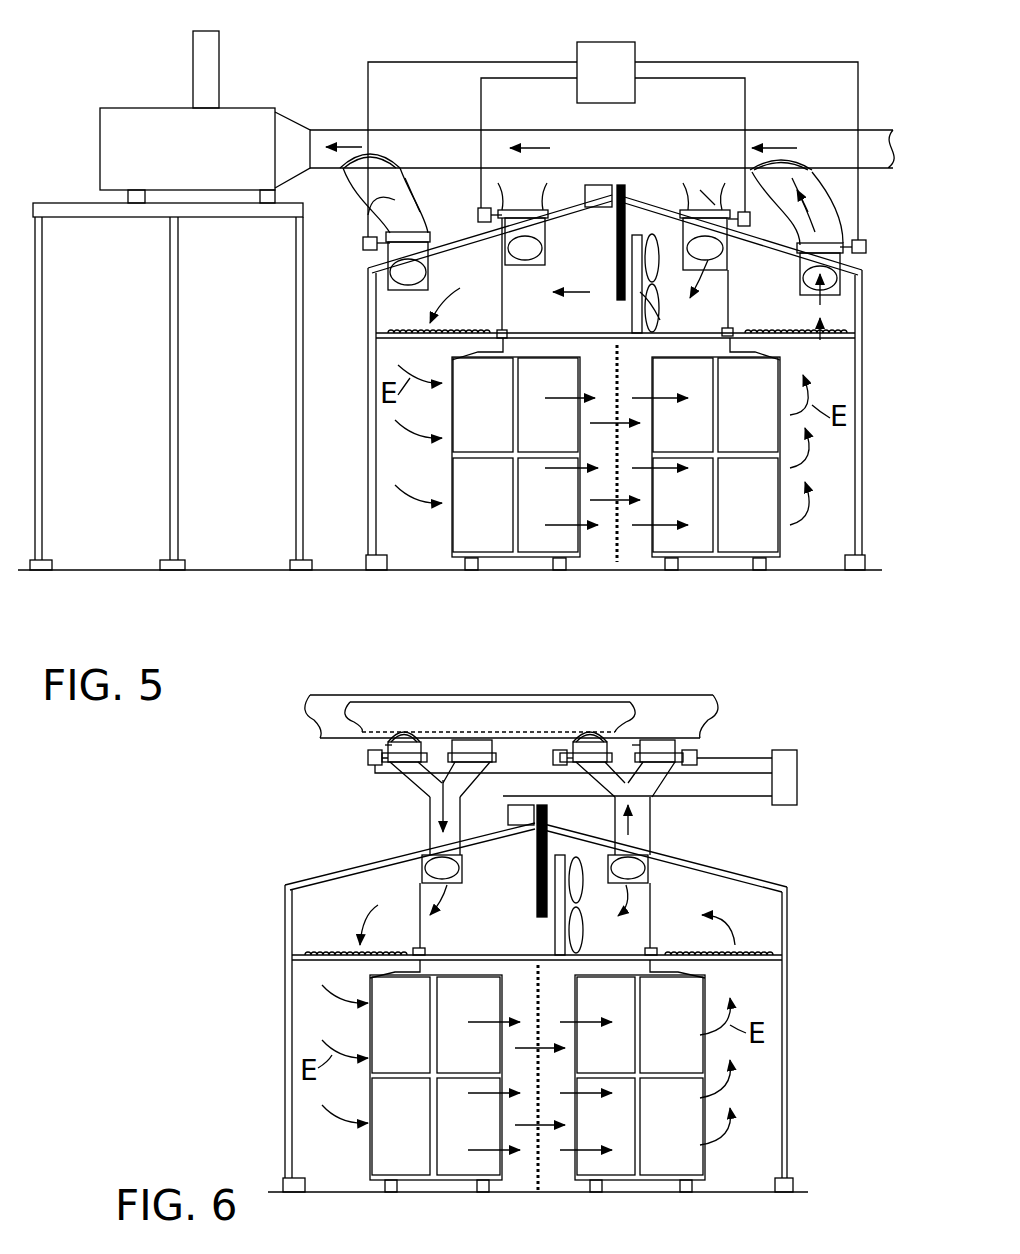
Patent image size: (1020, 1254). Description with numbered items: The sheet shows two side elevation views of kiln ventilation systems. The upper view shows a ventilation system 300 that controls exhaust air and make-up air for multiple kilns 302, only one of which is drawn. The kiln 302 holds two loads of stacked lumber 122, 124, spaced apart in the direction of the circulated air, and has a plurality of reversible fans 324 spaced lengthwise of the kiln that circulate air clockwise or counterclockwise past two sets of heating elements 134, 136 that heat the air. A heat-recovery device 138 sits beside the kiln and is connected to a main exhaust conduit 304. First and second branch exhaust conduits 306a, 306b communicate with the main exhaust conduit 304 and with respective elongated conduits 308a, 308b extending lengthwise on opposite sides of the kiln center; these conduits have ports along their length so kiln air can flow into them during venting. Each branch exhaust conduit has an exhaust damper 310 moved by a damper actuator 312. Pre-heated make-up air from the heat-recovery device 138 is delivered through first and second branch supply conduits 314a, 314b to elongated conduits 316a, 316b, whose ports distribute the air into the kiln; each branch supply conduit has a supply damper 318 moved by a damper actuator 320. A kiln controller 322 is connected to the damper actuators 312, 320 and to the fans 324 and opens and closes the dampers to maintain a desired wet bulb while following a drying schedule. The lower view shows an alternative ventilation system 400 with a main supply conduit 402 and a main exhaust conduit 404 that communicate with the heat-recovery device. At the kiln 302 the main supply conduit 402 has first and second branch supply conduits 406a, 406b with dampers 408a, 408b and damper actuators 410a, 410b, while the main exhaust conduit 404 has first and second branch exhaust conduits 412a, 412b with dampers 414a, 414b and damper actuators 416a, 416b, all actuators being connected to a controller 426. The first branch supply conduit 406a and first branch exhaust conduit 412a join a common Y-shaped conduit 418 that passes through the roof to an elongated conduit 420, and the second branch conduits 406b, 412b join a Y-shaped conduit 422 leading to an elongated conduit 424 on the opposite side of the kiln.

In FIG. 5, the load of stacked lumber 122 is at (516, 463).
In FIG. 6, the load of stacked lumber 122 is at (436, 1083).
In FIG. 5, the load of stacked lumber 124 is at (716, 463).
In FIG. 6, the load of stacked lumber 124 is at (641, 1083).
In FIG. 5, the heating elements 134 is at (392, 324).
In FIG. 5, the heating elements 136 is at (784, 328).
In FIG. 5, the heat-recovery device 138 is at (157, 97).
In FIG. 5, the ventilation system 300 is at (350, 52).
In FIG. 5, the kiln 302 is at (836, 588).
In FIG. 6, the kiln 302 is at (764, 1202).
In FIG. 5, the main exhaust conduit 304 is at (352, 130).
In FIG. 5, the first branch exhaust conduit 306a is at (380, 193).
In FIG. 5, the second branch exhaust conduit 306b is at (820, 185).
In FIG. 5, the elongated conduit 308a is at (430, 282).
In FIG. 5, the elongated conduit 308b is at (842, 285).
In FIG. 5, the exhaust damper 310 is at (430, 227).
In FIG. 5, the damper actuator 312 is at (363, 243).
In FIG. 5, the first branch supply conduit 314a is at (585, 108).
In FIG. 5, the second branch supply conduit 314b is at (715, 198).
In FIG. 5, the elongated conduit 316a is at (588, 280).
In FIG. 5, the elongated conduit 316b is at (688, 317).
In FIG. 5, the supply damper 318 is at (532, 210).
In FIG. 5, the damper actuator 320 is at (483, 208).
In FIG. 5, the kiln controller 322 is at (613, 141).
In FIG. 5, the reversible fans 324 is at (635, 305).
In FIG. 6, the reversible fans 324 is at (580, 916).
In FIG. 6, the ventilation system 400 is at (334, 687).
In FIG. 6, the main supply conduit 402 is at (700, 705).
In FIG. 6, the main exhaust conduit 404 is at (398, 700).
In FIG. 6, the first branch supply conduit 406a is at (447, 742).
In FIG. 6, the second branch supply conduit 406b is at (612, 740).
In FIG. 6, the damper 408a is at (483, 745).
In FIG. 6, the damper 408b is at (667, 740).
In FIG. 6, the damper actuator 410a is at (512, 752).
In FIG. 6, the damper actuator 410b is at (688, 755).
In FIG. 6, the first branch exhaust conduit 412a is at (388, 745).
In FIG. 6, the second branch exhaust conduit 412b is at (637, 745).
In FIG. 6, the damper 414a is at (385, 775).
In FIG. 6, the damper 414b is at (592, 757).
In FIG. 6, the damper actuator 416a is at (368, 758).
In FIG. 6, the damper actuator 416b is at (562, 750).
In FIG. 6, the Y-shaped conduit 418 is at (415, 810).
In FIG. 6, the elongated conduit 420 is at (446, 884).
In FIG. 6, the Y-shaped conduit 422 is at (655, 812).
In FIG. 6, the elongated conduit 424 is at (655, 878).
In FIG. 6, the controller 426 is at (797, 765).